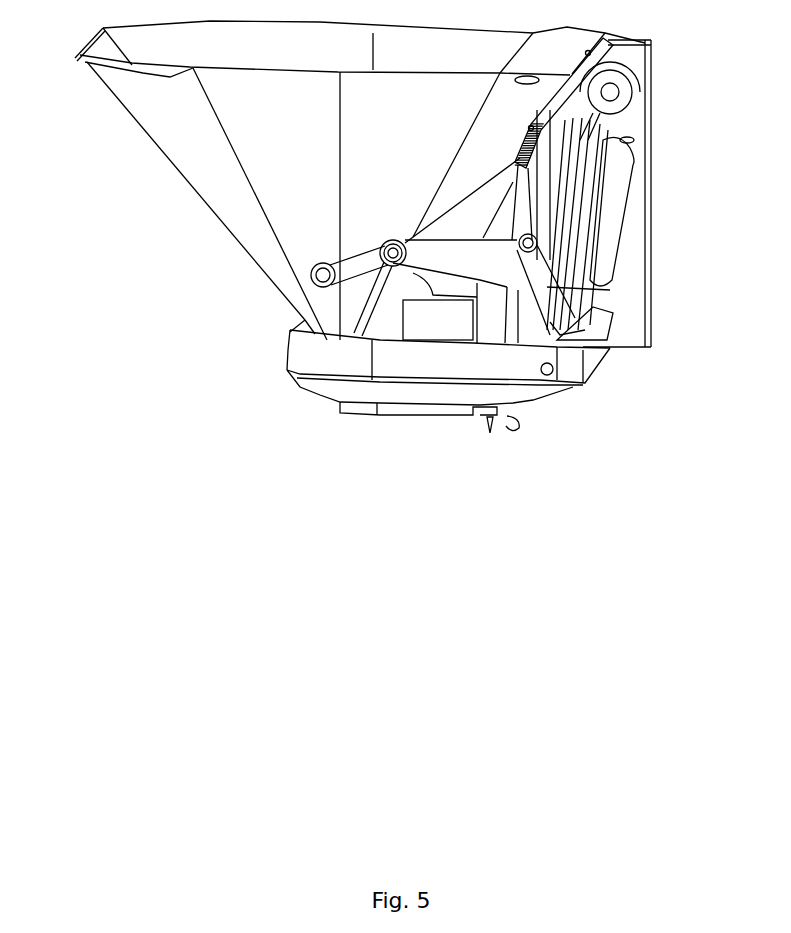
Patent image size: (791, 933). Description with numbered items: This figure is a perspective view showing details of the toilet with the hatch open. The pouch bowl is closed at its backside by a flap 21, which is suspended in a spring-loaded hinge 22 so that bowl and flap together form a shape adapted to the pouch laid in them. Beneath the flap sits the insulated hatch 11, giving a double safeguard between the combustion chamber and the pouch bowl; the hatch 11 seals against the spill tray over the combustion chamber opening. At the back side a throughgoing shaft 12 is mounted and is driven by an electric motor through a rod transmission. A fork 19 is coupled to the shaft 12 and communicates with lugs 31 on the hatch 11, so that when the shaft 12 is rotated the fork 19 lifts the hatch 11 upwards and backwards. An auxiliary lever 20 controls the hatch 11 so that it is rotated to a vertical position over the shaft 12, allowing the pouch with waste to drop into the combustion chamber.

The insulated hatch 11 is at (600, 220).
The throughgoing shaft 12 is at (552, 374).
The fork 19 is at (527, 258).
The auxiliary lever 20 is at (312, 270).
The flap 21 is at (488, 312).
The spring-loaded hinge 22 is at (505, 160).
The lugs 31 is at (452, 258).